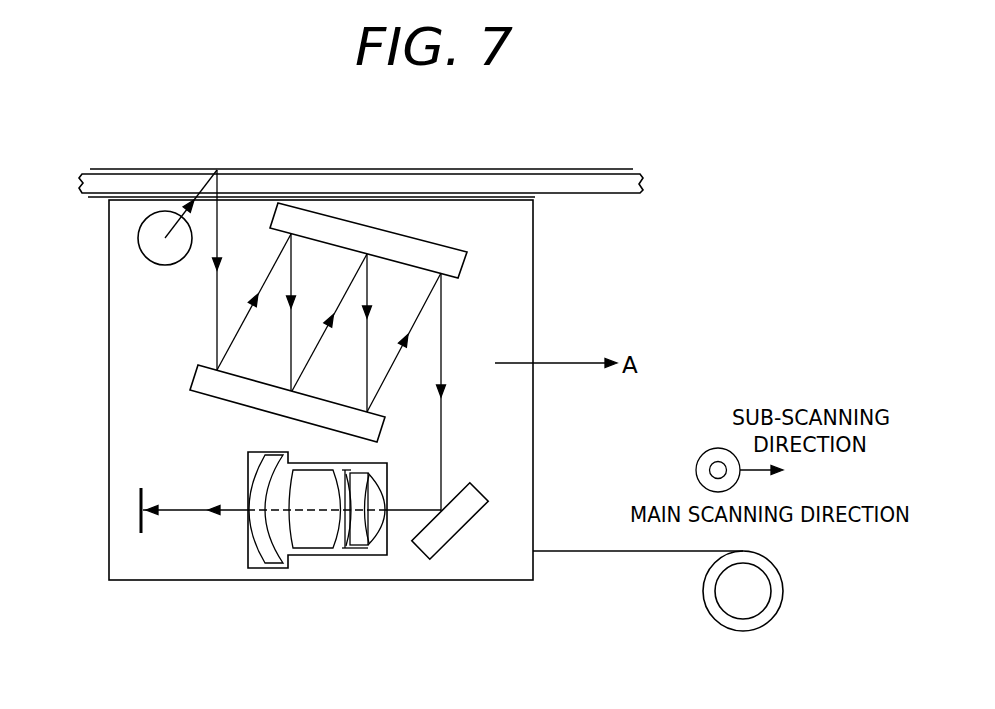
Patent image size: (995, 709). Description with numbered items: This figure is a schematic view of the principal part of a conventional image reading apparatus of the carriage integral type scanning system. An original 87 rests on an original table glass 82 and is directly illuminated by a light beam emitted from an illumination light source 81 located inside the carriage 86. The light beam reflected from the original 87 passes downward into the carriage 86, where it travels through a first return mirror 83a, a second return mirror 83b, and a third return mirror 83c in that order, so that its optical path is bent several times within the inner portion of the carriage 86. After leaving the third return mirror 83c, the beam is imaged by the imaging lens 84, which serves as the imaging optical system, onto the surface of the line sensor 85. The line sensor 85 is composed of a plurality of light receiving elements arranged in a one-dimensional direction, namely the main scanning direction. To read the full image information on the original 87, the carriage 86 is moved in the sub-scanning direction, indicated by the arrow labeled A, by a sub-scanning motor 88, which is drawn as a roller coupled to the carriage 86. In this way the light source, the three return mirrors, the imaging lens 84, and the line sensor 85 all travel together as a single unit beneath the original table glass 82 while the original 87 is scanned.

The illumination light source 81 is at (140, 250).
The original table glass 82 is at (598, 180).
The first return mirror 83a is at (215, 403).
The second return mirror 83b is at (425, 242).
The third return mirror 83c is at (483, 496).
The imaging lens 84 is at (318, 548).
The line sensor 85 is at (138, 522).
The carriage 86 is at (533, 447).
The original 87 is at (167, 170).
The sub-scanning motor 88 is at (705, 590).